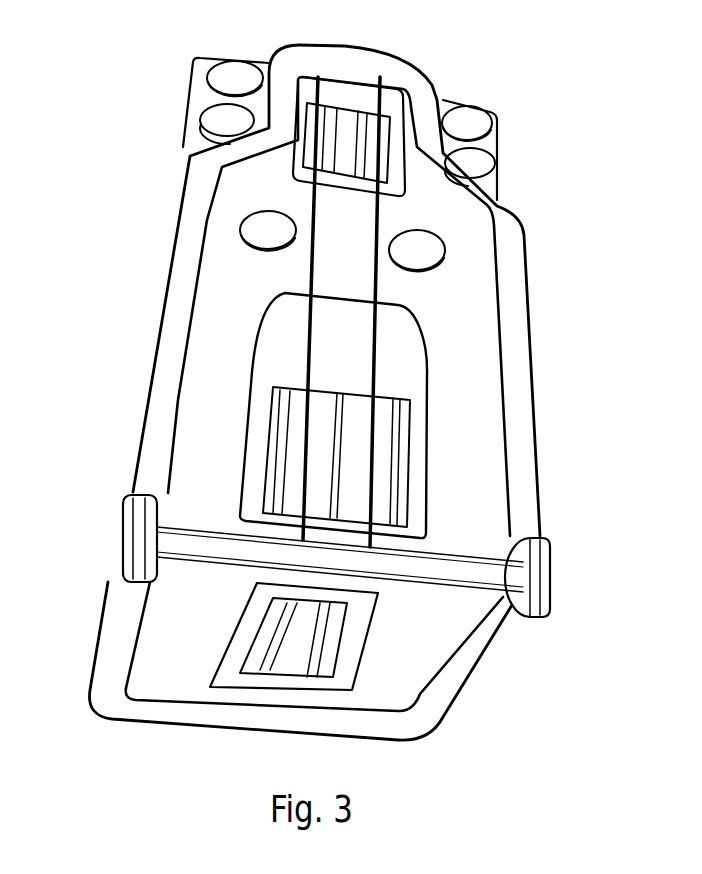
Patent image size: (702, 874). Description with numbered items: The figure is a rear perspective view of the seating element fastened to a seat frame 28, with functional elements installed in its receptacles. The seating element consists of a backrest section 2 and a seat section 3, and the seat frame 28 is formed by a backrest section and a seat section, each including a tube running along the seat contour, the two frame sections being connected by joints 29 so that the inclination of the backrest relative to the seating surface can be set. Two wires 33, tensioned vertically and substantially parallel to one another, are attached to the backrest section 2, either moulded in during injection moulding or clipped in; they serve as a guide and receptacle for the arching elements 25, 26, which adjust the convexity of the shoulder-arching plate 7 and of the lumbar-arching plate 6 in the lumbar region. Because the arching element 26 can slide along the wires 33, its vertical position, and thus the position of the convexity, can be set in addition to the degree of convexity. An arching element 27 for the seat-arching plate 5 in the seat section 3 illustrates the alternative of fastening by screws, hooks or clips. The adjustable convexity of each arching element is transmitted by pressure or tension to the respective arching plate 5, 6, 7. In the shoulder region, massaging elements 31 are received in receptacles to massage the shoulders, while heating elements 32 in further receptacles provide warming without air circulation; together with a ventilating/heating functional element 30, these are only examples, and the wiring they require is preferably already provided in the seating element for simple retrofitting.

The backrest section 2 is at (483, 390).
The seat section 3 is at (438, 633).
The seat-arching plate 5 is at (233, 630).
The lumbar-arching plate 6 is at (432, 363).
The shoulder-arching plate 7 is at (407, 180).
The arching element 25 is at (353, 107).
The arching element 26 is at (412, 482).
The arching element 27 is at (337, 647).
The seat frame 28 is at (528, 472).
The joints 29 is at (547, 570).
The functional element 30 is at (267, 217).
The massaging elements 31 is at (220, 123).
The heating elements 32 is at (230, 78).
The wires 33 is at (310, 267).